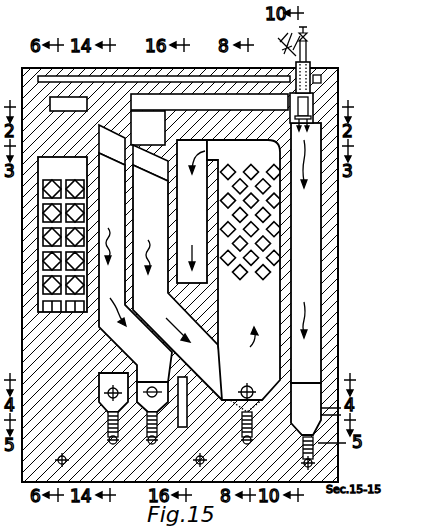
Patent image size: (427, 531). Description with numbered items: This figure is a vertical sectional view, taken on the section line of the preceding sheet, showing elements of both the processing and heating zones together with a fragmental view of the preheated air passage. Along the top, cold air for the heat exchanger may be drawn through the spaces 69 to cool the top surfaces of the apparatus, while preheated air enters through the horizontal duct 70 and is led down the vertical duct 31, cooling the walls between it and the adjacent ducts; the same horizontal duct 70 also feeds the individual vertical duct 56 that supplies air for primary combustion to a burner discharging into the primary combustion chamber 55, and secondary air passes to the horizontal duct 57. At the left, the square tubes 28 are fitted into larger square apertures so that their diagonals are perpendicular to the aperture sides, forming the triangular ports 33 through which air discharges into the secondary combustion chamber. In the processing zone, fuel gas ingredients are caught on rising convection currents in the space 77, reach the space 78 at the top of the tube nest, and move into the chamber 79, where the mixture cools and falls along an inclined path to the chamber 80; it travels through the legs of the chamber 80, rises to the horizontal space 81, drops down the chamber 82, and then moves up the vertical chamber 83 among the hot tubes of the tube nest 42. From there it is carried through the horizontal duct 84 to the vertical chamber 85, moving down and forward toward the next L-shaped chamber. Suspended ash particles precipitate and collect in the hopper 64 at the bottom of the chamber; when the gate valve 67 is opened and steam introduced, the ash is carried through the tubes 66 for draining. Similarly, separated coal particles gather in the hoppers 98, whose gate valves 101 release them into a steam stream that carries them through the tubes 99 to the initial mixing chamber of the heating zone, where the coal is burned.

The tubes 28 is at (43, 218).
The vertical duct 31 is at (147, 107).
The triangular ports 33 is at (43, 262).
The tube nest 42 is at (234, 168).
The primary combustion chamber 55 is at (306, 253).
The vertical duct 56 is at (336, 86).
The horizontal duct 57 is at (188, 412).
The hopper 64 is at (306, 409).
The tubes 66 is at (67, 461).
The gate valve 67 is at (345, 452).
The spaces 69 is at (243, 72).
The horizontal duct 70 is at (169, 103).
The space 77 is at (106, 372).
The space 78 is at (112, 145).
The chamber 79 is at (135, 267).
The chamber 80 is at (152, 389).
The horizontal space 81 is at (150, 163).
The chamber 82 is at (180, 282).
The vertical chamber 83 is at (228, 270).
The horizontal duct 84 is at (206, 158).
The vertical chamber 85 is at (192, 211).
The hoppers 98 is at (108, 415).
The tubes 99 is at (109, 441).
The gate valves 101 is at (118, 426).